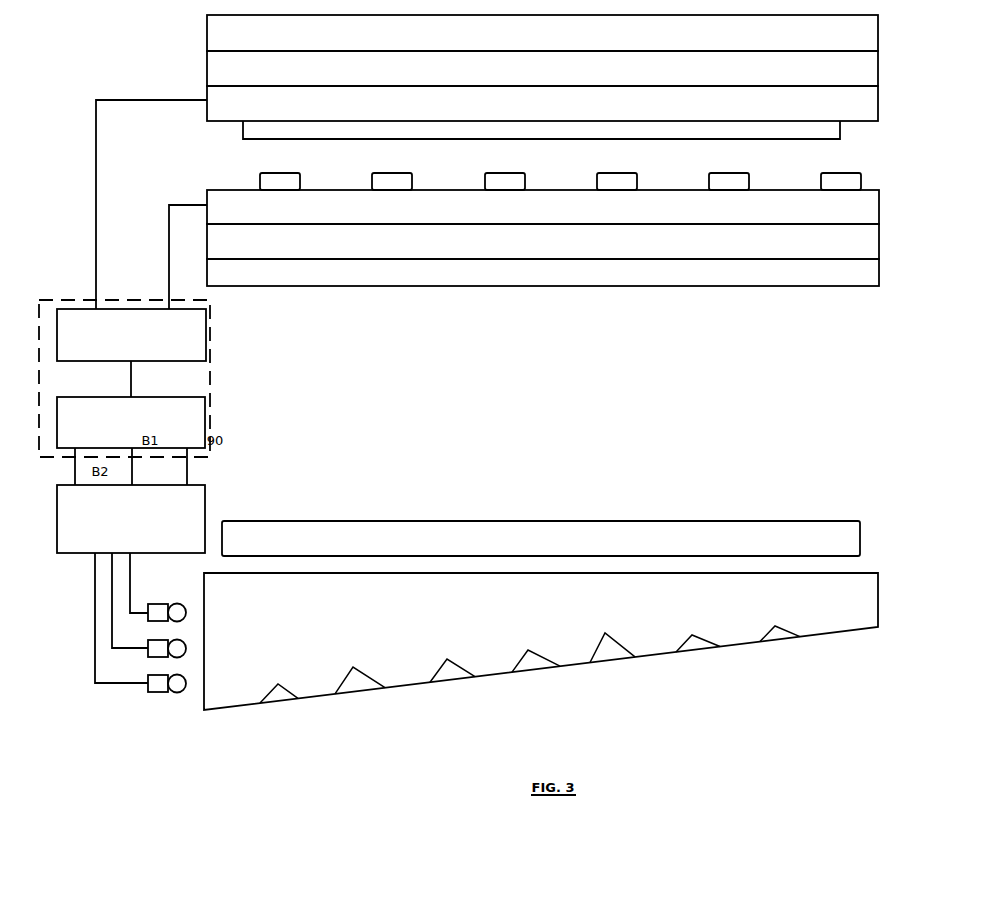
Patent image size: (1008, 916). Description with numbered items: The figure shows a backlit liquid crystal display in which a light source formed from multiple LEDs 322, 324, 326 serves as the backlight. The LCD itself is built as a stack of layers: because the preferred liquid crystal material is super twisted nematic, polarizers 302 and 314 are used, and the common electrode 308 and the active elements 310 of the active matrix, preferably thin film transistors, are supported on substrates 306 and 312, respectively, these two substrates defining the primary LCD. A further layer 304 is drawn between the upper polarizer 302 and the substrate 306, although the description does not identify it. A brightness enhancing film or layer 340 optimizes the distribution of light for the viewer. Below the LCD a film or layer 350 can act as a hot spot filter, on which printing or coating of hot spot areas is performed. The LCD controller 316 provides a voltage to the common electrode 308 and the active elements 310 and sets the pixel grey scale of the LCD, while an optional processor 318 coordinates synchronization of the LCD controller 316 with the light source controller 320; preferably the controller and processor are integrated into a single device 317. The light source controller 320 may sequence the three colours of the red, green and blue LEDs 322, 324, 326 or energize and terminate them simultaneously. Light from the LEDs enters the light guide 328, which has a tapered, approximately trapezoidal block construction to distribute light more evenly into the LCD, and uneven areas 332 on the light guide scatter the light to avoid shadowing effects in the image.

The polarizer 302 is at (656, 38).
The second layer 304 is at (528, 73).
The substrate 306 is at (624, 110).
The common electrode 308 is at (528, 136).
The active elements 310 is at (893, 176).
The substrate 312 is at (551, 213).
The polarizer 314 is at (438, 248).
The brightness enhancing film 340 is at (584, 278).
The LCD controller 316 is at (118, 341).
The single device 317 is at (260, 328).
The processor 318 is at (118, 430).
The light source controller 320 is at (118, 527).
The LED 322 is at (140, 590).
The LED 324 is at (126, 639).
The LED 326 is at (116, 714).
The light guide 328 is at (553, 618).
The uneven areas 332 is at (530, 664).
The film 350 is at (528, 548).